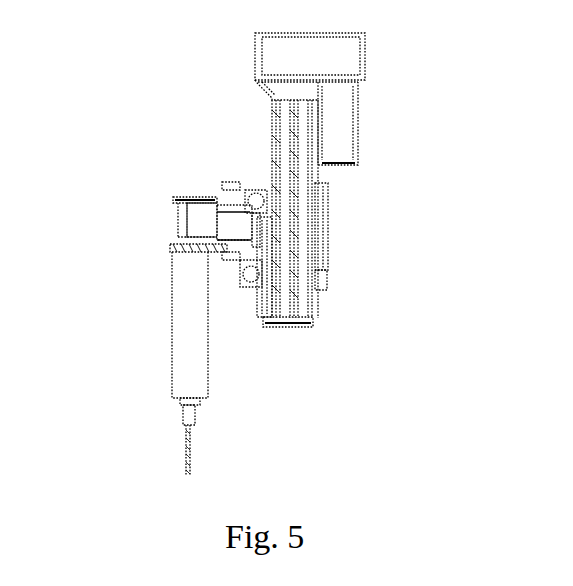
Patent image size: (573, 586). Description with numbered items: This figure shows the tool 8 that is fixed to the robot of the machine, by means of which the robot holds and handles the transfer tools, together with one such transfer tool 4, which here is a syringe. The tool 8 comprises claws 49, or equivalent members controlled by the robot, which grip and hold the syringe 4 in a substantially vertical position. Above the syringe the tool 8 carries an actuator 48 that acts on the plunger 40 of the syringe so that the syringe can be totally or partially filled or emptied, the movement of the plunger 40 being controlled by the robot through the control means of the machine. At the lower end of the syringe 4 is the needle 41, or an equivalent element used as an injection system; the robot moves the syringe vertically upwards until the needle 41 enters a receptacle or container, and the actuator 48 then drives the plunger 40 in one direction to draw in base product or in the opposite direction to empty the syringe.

The tool 8 is at (362, 236).
The actuator 48 is at (217, 197).
The plunger 40 is at (168, 210).
The claws 49 is at (207, 243).
The transfer tool 4 is at (170, 307).
The needle 41 is at (188, 443).